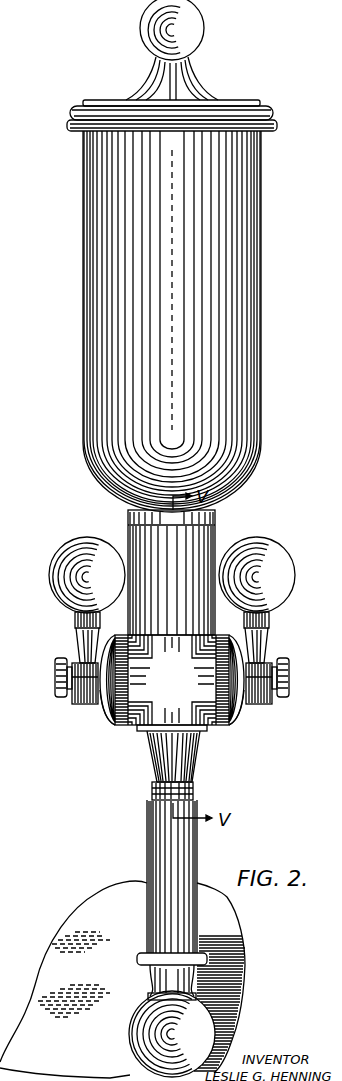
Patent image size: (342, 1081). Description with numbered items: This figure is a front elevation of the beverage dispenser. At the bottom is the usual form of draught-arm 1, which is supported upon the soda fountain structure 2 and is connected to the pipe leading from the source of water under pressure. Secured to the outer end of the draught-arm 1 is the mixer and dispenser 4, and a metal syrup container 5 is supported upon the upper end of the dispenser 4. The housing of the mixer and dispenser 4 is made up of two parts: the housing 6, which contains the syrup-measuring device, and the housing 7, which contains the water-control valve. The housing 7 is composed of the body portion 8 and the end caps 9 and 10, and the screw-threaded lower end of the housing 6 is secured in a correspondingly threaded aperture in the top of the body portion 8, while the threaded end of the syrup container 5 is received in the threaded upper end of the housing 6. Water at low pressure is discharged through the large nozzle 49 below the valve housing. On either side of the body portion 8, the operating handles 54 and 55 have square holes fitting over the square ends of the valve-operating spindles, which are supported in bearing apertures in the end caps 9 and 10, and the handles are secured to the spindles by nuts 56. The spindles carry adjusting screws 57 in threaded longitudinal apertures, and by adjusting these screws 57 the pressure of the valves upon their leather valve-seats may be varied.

The draught-arm 1 is at (148, 847).
The soda fountain structure 2 is at (62, 920).
The mixer and dispenser 4 is at (153, 744).
The syrup container 5 is at (84, 292).
The housing of the syrup-measuring device 6 is at (134, 535).
The housing of the water-control valve 7 is at (206, 729).
The body portion 8 is at (172, 680).
The end cap 9 is at (106, 712).
The end cap 10 is at (240, 712).
The large nozzle 49 is at (152, 785).
The operating handle 54 is at (74, 621).
The operating handle 55 is at (270, 621).
The nut 56 is at (78, 700).
The adjusting screw 57 is at (55, 670).